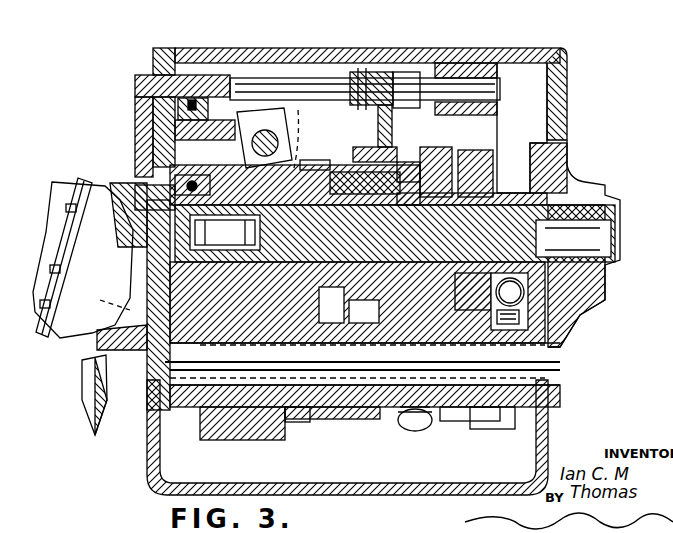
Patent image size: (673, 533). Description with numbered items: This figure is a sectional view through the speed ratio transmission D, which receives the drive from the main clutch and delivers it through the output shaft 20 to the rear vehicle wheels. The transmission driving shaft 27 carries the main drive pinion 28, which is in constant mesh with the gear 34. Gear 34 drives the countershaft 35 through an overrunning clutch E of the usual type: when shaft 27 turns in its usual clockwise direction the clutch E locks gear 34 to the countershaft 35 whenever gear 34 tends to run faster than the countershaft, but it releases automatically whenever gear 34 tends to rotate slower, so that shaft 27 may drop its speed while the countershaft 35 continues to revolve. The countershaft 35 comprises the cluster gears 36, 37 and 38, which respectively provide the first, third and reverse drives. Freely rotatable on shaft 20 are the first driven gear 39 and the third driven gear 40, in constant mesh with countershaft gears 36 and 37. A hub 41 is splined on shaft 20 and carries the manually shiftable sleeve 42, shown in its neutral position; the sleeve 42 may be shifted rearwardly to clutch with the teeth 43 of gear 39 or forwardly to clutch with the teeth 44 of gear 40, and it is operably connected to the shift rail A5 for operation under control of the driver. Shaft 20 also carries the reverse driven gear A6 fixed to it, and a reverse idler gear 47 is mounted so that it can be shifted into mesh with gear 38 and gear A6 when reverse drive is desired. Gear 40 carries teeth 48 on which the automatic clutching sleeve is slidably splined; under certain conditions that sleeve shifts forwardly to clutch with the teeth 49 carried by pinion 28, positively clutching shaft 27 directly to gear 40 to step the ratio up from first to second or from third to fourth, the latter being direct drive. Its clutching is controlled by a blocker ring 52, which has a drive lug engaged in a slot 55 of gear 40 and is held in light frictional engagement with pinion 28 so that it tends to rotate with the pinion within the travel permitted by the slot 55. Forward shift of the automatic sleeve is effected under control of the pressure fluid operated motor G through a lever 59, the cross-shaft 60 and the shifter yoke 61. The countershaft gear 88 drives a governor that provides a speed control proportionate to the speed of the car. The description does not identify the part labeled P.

The speed ratio transmission D is at (393, 60).
The shifter yoke 61 is at (242, 150).
The cross-shaft 60 is at (268, 132).
The shift rail A5 is at (305, 82).
The lever 59 is at (392, 72).
The transmission driving shaft 27 is at (118, 185).
The housing wall P is at (179, 137).
The main drive pinion 28 is at (183, 165).
The slot 55 is at (205, 136).
The teeth 49 is at (358, 179).
The blocker ring 52 is at (172, 192).
The teeth 48 is at (282, 168).
The third driven gear 40 is at (326, 168).
The teeth 44 is at (340, 180).
The manually shiftable sleeve 42 is at (393, 168).
The teeth 43 is at (425, 170).
The first driven gear 39 is at (462, 168).
The reverse driven gear A6 is at (495, 170).
The hub 41 is at (390, 250).
The output shaft 20 is at (617, 210).
The pressure fluid operated motor G is at (74, 337).
The countershaft gear 88 is at (360, 322).
The reverse idler gear 47 is at (500, 343).
The overrunning clutch E is at (225, 412).
The gear 34 is at (182, 440).
The cluster gear 37 is at (298, 420).
The countershaft 35 is at (400, 407).
The cluster gear 36 is at (453, 410).
The cluster gear 38 is at (485, 410).